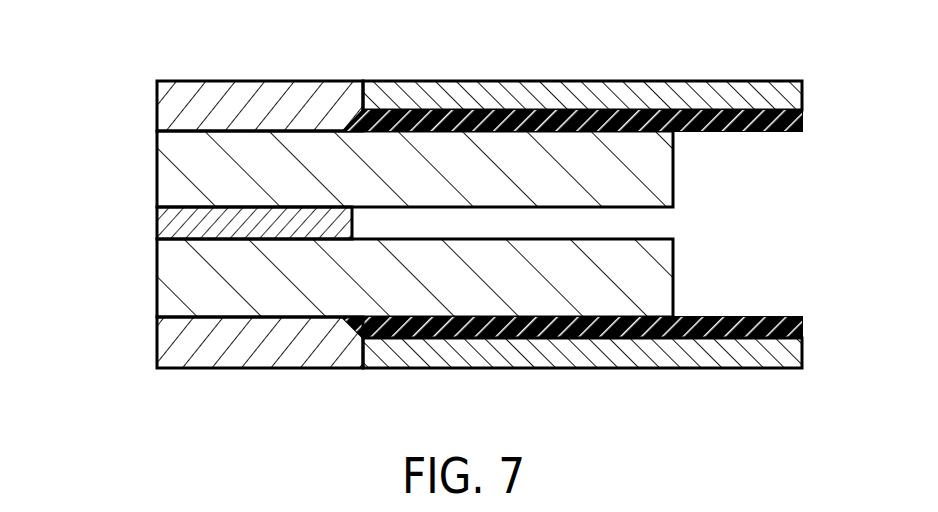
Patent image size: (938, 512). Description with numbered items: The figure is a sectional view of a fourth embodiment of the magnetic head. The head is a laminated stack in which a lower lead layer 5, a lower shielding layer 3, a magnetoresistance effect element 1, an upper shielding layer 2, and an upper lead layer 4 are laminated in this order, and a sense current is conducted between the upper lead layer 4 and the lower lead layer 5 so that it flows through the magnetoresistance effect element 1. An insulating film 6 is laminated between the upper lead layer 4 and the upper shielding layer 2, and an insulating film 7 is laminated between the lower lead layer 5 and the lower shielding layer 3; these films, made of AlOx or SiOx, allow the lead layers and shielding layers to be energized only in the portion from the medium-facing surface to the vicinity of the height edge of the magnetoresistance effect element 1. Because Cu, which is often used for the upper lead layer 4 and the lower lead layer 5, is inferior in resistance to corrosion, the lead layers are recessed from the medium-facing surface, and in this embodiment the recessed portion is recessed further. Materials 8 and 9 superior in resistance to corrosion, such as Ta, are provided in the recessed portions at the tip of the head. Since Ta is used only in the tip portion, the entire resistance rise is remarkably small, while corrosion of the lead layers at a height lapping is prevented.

The magnetoresistance effect element 1 is at (157, 222).
The upper shielding layer 2 is at (177, 167).
The lower shielding layer 3 is at (167, 262).
The upper lead layer 4 is at (595, 85).
The lower lead layer 5 is at (587, 363).
The insulating film 6 is at (688, 136).
The insulating film 7 is at (695, 318).
The material superior in resistance to corrosion 8 is at (185, 85).
The material superior in resistance to corrosion 9 is at (190, 363).